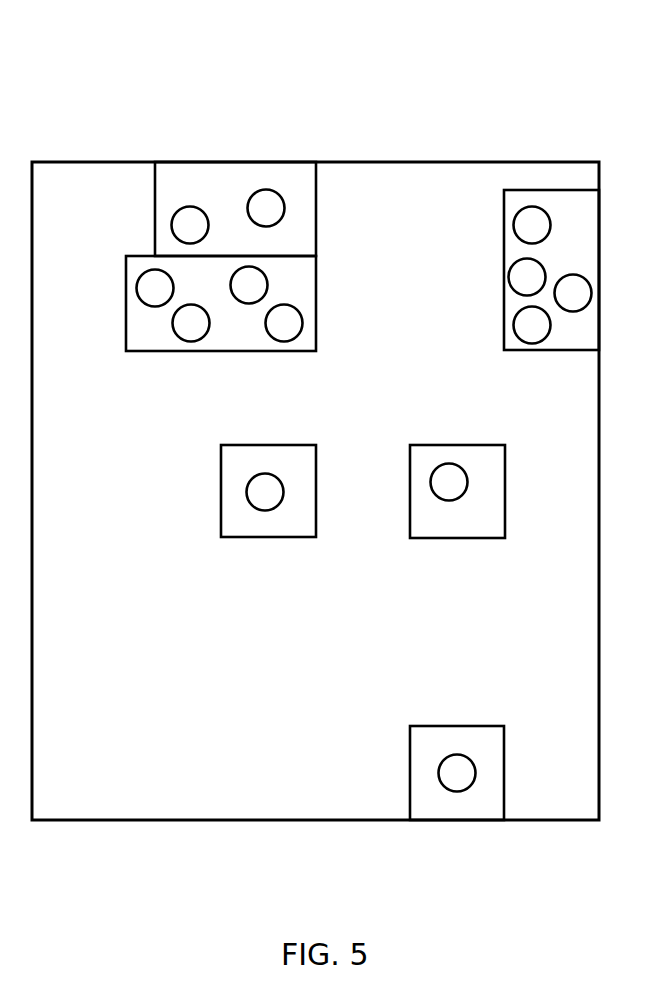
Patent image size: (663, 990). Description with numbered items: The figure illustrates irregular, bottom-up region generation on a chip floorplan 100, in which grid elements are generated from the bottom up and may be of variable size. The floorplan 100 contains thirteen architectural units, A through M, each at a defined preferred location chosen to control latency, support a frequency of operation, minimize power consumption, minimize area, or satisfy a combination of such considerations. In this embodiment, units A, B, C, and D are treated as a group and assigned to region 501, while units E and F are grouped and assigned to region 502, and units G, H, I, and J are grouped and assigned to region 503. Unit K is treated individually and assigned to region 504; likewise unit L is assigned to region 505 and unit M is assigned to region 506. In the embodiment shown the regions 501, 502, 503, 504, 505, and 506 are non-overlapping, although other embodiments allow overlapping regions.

The chip floorplan 100 is at (500, 90).
The region 501 is at (316, 301).
The region 502 is at (316, 211).
The region 503 is at (560, 350).
The region 504 is at (437, 538).
The region 505 is at (243, 537).
The region 506 is at (410, 760).